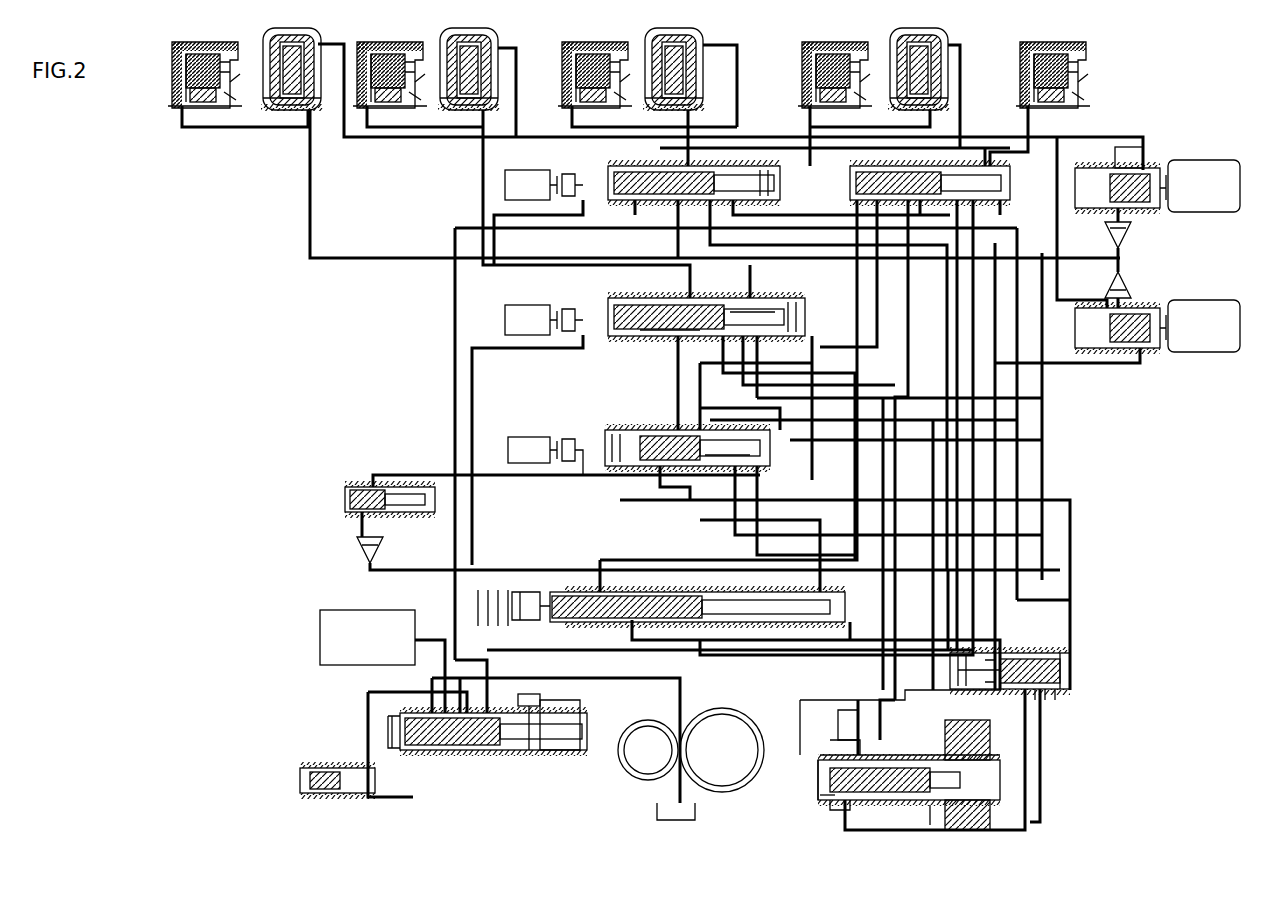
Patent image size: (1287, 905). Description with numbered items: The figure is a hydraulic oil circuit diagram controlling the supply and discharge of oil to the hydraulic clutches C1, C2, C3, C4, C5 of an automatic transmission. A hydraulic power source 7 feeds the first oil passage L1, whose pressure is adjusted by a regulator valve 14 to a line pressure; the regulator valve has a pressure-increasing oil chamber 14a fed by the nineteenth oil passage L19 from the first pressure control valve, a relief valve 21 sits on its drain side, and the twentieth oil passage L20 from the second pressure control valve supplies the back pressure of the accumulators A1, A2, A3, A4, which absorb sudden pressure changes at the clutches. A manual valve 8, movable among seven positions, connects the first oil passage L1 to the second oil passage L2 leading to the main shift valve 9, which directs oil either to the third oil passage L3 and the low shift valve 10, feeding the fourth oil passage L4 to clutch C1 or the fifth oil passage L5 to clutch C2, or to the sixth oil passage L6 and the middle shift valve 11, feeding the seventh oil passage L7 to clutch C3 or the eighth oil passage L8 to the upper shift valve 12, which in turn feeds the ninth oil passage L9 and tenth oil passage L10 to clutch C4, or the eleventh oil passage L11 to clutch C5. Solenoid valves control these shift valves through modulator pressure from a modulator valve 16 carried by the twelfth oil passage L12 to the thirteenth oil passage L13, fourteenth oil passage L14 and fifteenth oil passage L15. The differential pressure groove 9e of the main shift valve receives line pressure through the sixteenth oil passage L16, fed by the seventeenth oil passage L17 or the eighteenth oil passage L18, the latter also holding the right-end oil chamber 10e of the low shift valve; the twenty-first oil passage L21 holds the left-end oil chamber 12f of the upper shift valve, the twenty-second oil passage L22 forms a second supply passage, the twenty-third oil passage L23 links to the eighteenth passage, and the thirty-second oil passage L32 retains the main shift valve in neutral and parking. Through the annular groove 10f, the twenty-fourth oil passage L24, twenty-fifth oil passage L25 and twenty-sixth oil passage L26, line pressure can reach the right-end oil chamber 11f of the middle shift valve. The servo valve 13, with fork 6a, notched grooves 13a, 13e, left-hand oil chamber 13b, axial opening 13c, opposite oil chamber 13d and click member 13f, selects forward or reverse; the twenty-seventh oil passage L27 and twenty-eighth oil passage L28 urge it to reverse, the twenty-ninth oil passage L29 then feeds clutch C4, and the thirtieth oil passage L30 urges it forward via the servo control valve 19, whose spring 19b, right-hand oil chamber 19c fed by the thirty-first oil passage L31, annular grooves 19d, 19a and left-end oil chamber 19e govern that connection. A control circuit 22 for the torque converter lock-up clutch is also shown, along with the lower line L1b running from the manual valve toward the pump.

The first-speed hydraulic clutch C1 is at (212, 108).
The accumulator A1 is at (295, 112).
The second-speed hydraulic clutch C2 is at (392, 108).
The accumulator A2 is at (500, 62).
The third-speed hydraulic clutch C3 is at (560, 72).
The accumulator A3 is at (710, 65).
The fourth-speed hydraulic clutch C4 is at (800, 82).
The accumulator A4 is at (950, 62).
The fifth-speed hydraulic clutch C5 is at (1080, 62).
The No. 4 oil passage L4 is at (308, 243).
The No. 20 oil passage L20 is at (1143, 135).
The No. 5 oil passage L5 is at (481, 170).
The No. 7 oil passage L7 is at (603, 127).
The right-end oil chamber 11f is at (690, 150).
The left-end oil chamber 12f is at (820, 160).
The No. 11 oil passage L11 is at (1032, 125).
The 3-4 shift valve 11 is at (660, 205).
The No. 15 oil passage L15 is at (590, 218).
The No. 8 oil passage L8 is at (770, 195).
The No. 1 oil passage L1 is at (750, 235).
The 4-5 shift valve 12 is at (975, 165).
The No. 18 oil passage L18 is at (985, 215).
The No. 6 oil passage L6 is at (862, 265).
The No. 9 oil passage L9 is at (910, 305).
The No. 17 oil passage L17 is at (975, 278).
The No. 16 oil passage L16 is at (960, 325).
The No. 21 oil passage L21 is at (860, 366).
The No. 19 oil passage L19 is at (1130, 365).
The 1-2 shift valve 10 is at (625, 300).
The right-end oil chamber 10e is at (762, 298).
The annular groove 10f is at (685, 350).
The No. 14 oil passage L14 is at (590, 352).
The No. 12 oil passage L12 is at (453, 388).
The No. 3 oil passage L3 is at (670, 395).
The main shift valve 9 is at (645, 428).
The differential pressure groove 9e is at (725, 470).
The No. 13 oil passage L13 is at (470, 477).
The modulator valve 16 is at (362, 478).
The No. 32 oil passage L32 is at (620, 520).
The No. 2 oil passage L2 is at (610, 538).
The No. 10 oil passage L10 is at (815, 455).
The No. 22 oil passage L22 is at (800, 475).
The No. 27 oil passage L27 is at (800, 520).
The No. 23 oil passage L23 is at (1030, 412).
The No. 24 oil passage L24 is at (1040, 445).
The No. 28 oil passage L28 is at (1030, 478).
The No. 26 oil passage L26 is at (1075, 525).
The manual valve 8 is at (570, 590).
The No. 29 oil passage L29 is at (895, 625).
The No. 31 oil passage L31 is at (1075, 612).
The servo control valve 19 is at (1068, 650).
The fork 6a is at (958, 672).
The spring 19b is at (985, 660).
The right-hand oil chamber 19c is at (1070, 672).
The annular groove 19d is at (1040, 695).
The annular groove 19a is at (1050, 695).
The left-end oil chamber 19e is at (1060, 695).
The No. 25 oil passage L25 is at (1040, 790).
The No. 30 oil passage L30 is at (1042, 820).
The servo valve 13 is at (830, 735).
The notched groove 13a is at (838, 712).
The left-hand oil chamber 13b is at (820, 745).
The notched groove 13e is at (818, 770).
The oil chamber 13d is at (822, 795).
The axial opening 13c is at (840, 808).
The click member 13f is at (930, 805).
The control circuit 22 is at (350, 612).
The line L1 (lower) L1b is at (524, 731).
The regulator valve 14 is at (490, 752).
The oil chamber 14a is at (500, 752).
The relief valve 21 is at (345, 762).
The hydraulic power source 7 is at (625, 780).